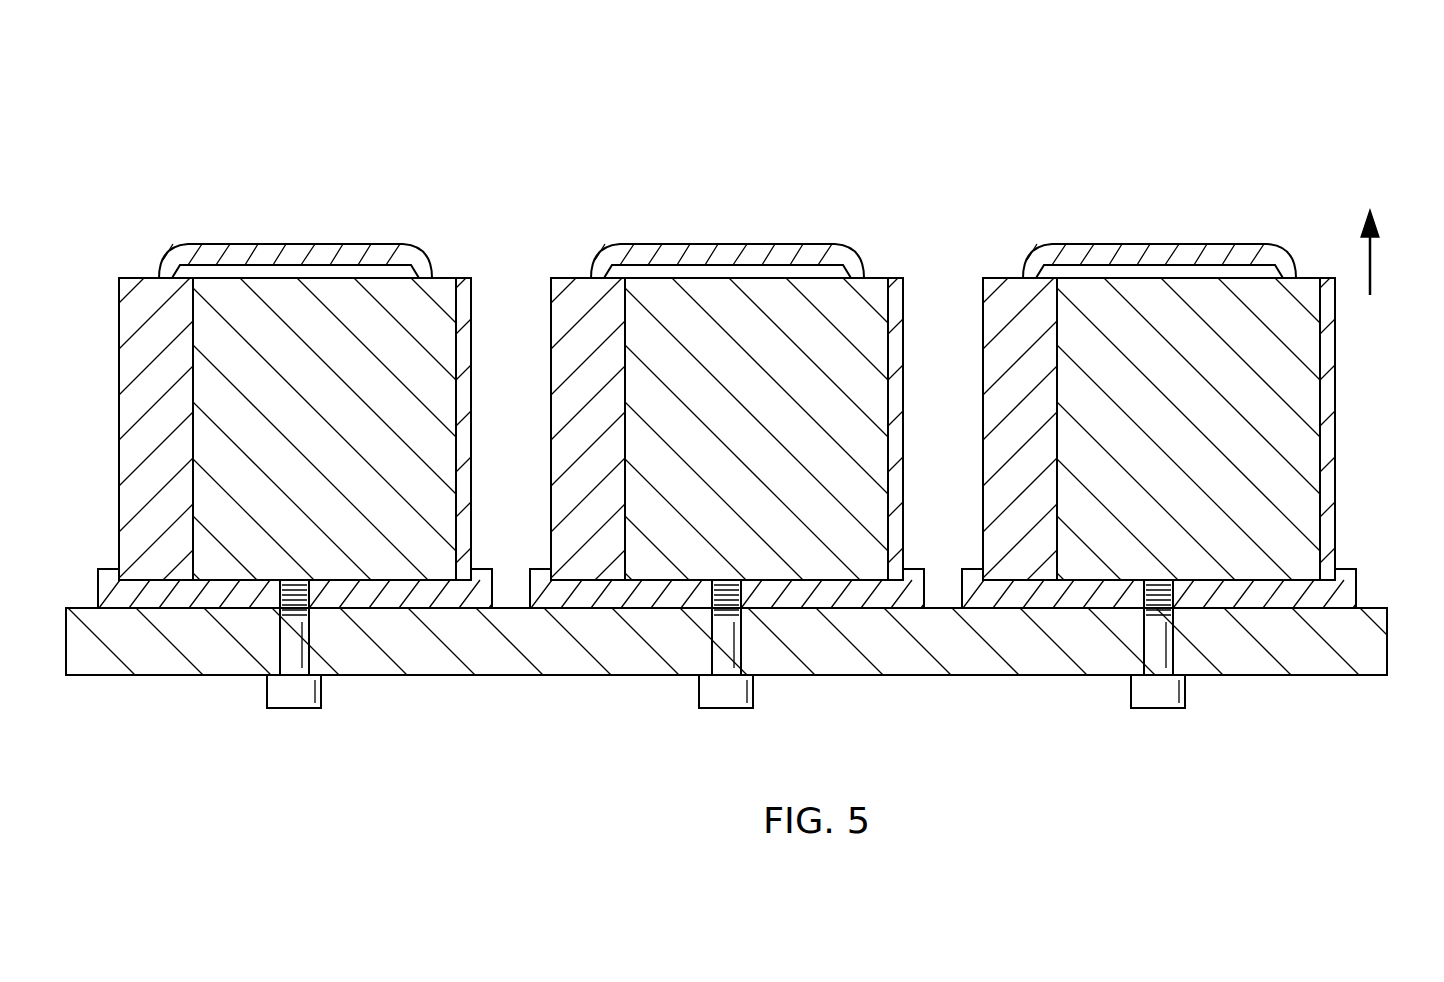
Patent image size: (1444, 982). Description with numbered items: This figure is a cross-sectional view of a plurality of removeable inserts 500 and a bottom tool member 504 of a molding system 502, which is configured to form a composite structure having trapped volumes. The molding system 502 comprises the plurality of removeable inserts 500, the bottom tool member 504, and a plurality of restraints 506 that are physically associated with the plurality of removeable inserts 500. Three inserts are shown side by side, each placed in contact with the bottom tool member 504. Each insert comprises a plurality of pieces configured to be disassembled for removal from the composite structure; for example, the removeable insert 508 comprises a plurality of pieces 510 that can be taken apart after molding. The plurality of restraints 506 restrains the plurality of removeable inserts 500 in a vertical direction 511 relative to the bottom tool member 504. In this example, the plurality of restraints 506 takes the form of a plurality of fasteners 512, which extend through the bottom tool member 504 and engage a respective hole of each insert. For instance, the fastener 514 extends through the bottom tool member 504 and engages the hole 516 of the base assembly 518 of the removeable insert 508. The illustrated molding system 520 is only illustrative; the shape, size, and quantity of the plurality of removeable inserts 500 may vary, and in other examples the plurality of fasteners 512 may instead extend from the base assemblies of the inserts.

The plurality of removeable inserts 500 is at (267, 213).
The molding system 502 is at (194, 93).
The bottom tool member 504 is at (503, 668).
The plurality of restraints 506 is at (715, 643).
The removeable insert 508 is at (637, 221).
The plurality of pieces 510 is at (707, 287).
The vertical direction 511 is at (1373, 262).
The plurality of fasteners 512 is at (724, 721).
The fastener 514 is at (755, 690).
The hole 516 is at (740, 590).
The base assembly 518 is at (530, 580).
The molding system 520 is at (641, 113).